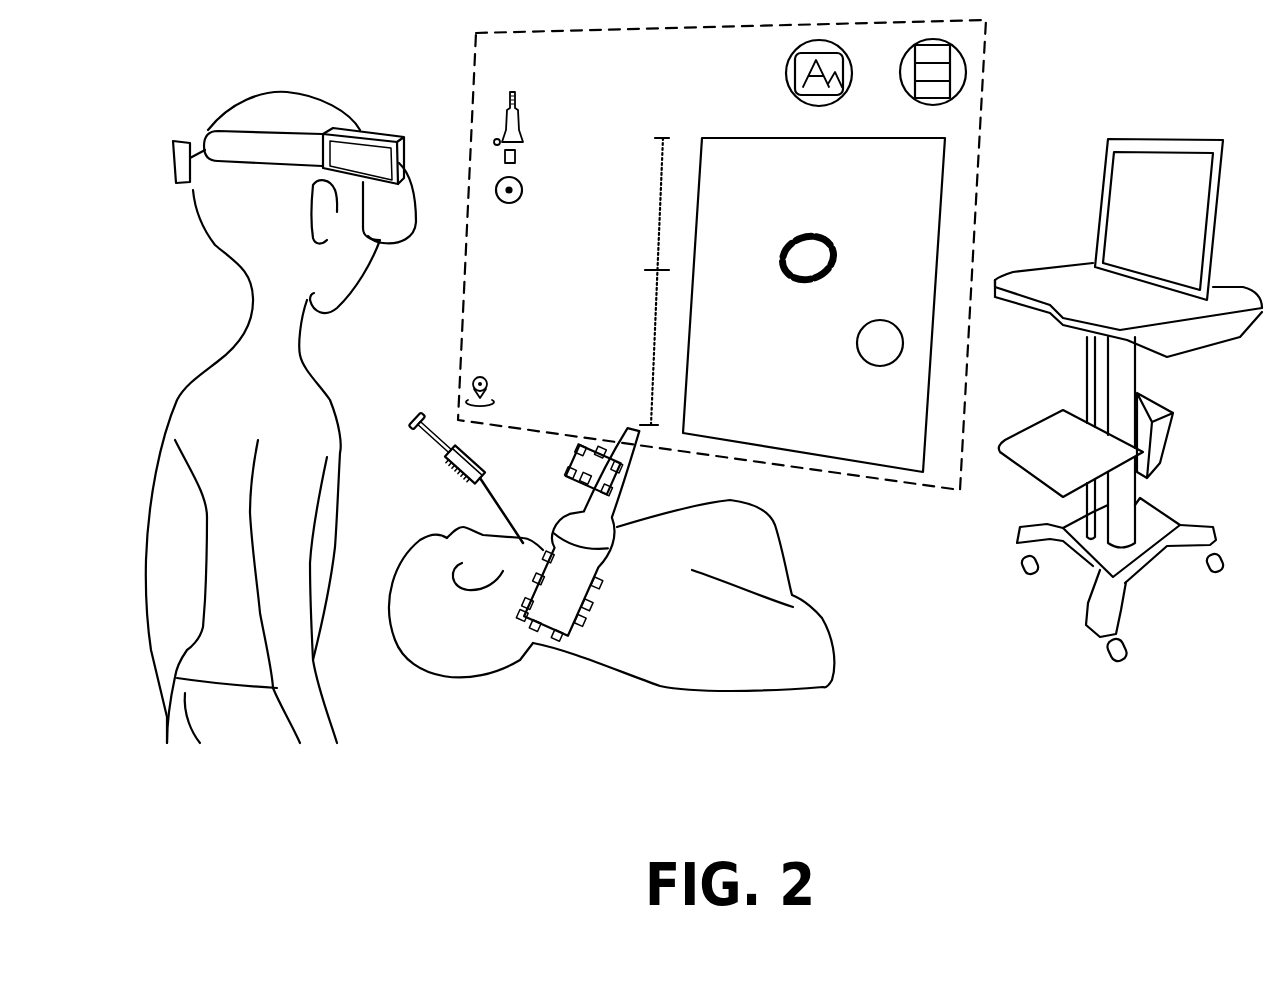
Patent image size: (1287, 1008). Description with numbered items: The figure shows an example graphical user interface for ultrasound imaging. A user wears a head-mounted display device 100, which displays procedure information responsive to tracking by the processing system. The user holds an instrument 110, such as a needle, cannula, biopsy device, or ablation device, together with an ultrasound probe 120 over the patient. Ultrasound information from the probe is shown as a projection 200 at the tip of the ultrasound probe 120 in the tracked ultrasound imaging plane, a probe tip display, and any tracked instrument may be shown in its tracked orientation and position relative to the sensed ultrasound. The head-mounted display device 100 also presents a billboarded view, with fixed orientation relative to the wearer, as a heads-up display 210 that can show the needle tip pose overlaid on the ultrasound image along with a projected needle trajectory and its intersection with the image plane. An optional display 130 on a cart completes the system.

The head-mounted display device 100 is at (370, 133).
The instrument 110 is at (468, 478).
The ultrasound probe 120 is at (645, 462).
The display 130 is at (1113, 167).
The projection 200 is at (546, 637).
The heads-up display 210 is at (878, 480).